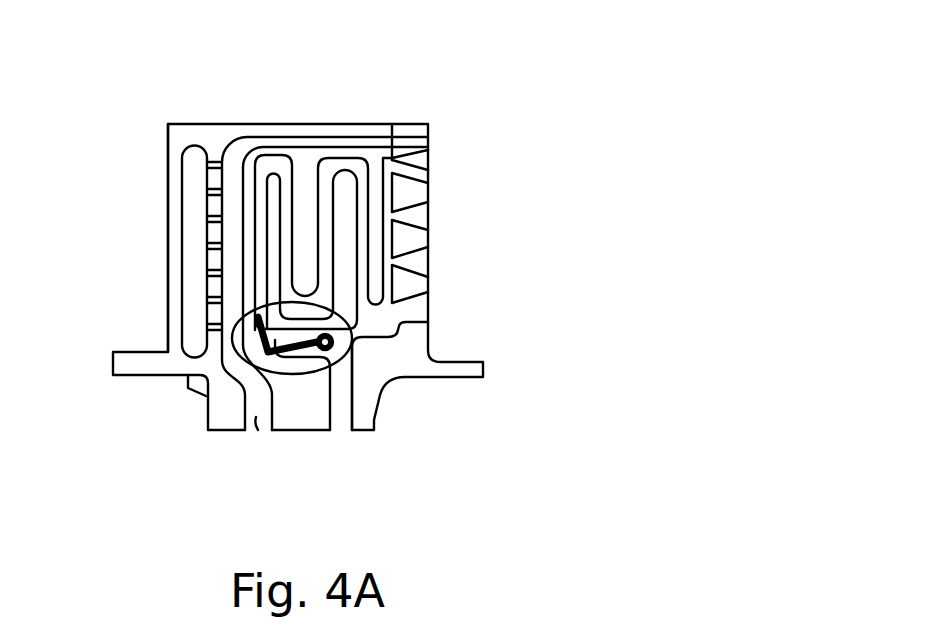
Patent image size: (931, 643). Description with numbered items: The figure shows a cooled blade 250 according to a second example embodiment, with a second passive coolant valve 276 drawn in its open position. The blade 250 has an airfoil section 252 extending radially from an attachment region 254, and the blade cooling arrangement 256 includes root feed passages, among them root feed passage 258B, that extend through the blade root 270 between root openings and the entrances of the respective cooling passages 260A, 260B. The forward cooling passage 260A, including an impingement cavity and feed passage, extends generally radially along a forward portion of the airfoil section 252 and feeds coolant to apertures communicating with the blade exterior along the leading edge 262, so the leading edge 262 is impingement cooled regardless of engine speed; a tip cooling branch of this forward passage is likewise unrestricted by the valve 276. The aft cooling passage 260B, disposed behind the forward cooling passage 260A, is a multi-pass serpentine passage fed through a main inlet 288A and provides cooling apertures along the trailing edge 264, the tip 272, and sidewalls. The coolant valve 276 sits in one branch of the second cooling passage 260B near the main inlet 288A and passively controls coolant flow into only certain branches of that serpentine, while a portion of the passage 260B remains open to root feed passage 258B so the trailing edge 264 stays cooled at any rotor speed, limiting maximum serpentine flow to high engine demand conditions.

The blade 250 is at (529, 130).
The airfoil section 252 is at (165, 185).
The attachment region 254 is at (434, 416).
The blade cooling arrangement 256 is at (293, 381).
The root/feed passage 258B is at (337, 412).
The cooling passage 260A is at (212, 150).
The cooling passage 260B is at (312, 190).
The leading edge 262 is at (131, 293).
The trailing edge 264 is at (497, 262).
The blade root 270 is at (310, 414).
The tip 272 is at (377, 122).
The coolant valve 276 is at (283, 368).
The flow director 288A is at (258, 420).